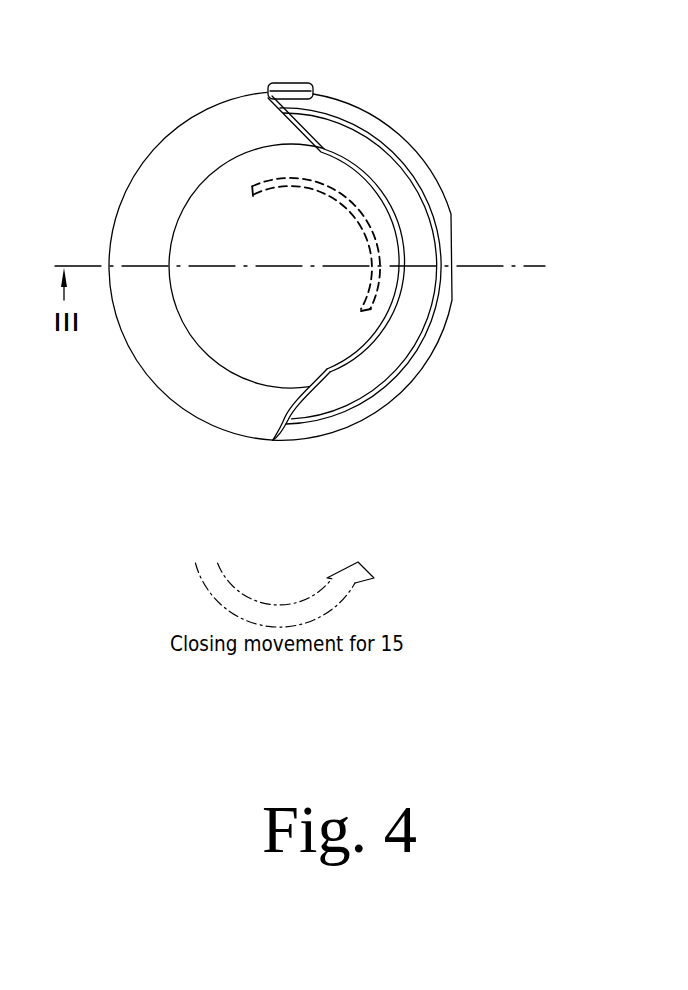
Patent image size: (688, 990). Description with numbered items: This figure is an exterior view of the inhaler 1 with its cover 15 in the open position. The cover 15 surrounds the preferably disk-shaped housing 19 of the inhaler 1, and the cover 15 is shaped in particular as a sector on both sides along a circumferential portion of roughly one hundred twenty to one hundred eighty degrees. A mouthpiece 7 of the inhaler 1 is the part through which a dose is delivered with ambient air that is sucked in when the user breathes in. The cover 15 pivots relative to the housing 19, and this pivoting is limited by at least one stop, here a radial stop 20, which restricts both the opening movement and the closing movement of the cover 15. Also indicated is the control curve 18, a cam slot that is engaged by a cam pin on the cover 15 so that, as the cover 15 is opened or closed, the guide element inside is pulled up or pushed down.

The inhaler 1 is at (433, 122).
The mouthpiece 7 is at (452, 288).
The cover 15 is at (207, 133).
The control curve 18 is at (373, 319).
The housing 19 is at (336, 423).
The radial stop 20 is at (300, 88).